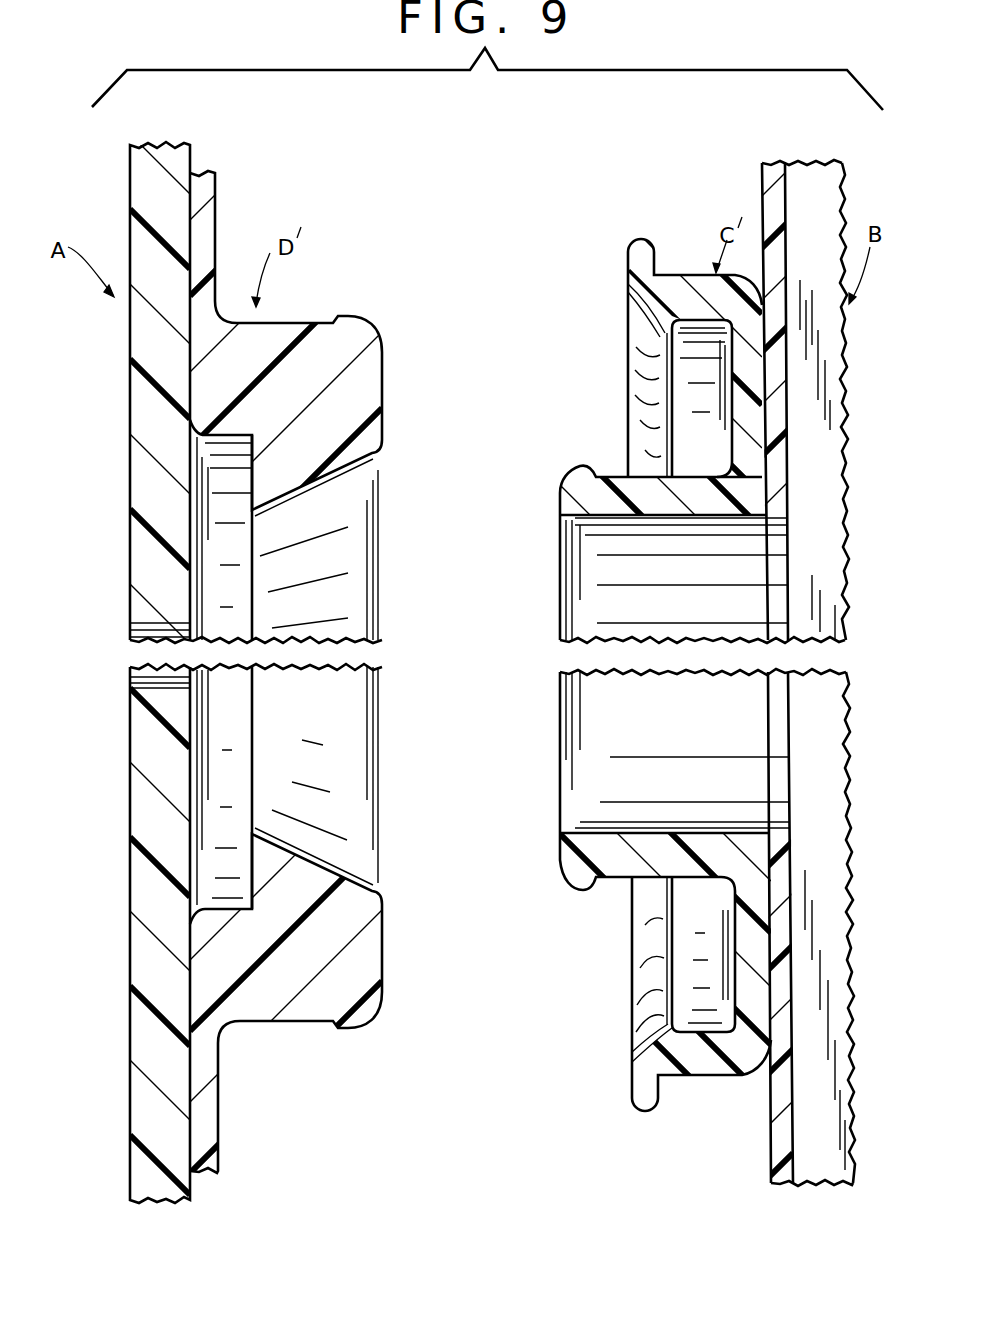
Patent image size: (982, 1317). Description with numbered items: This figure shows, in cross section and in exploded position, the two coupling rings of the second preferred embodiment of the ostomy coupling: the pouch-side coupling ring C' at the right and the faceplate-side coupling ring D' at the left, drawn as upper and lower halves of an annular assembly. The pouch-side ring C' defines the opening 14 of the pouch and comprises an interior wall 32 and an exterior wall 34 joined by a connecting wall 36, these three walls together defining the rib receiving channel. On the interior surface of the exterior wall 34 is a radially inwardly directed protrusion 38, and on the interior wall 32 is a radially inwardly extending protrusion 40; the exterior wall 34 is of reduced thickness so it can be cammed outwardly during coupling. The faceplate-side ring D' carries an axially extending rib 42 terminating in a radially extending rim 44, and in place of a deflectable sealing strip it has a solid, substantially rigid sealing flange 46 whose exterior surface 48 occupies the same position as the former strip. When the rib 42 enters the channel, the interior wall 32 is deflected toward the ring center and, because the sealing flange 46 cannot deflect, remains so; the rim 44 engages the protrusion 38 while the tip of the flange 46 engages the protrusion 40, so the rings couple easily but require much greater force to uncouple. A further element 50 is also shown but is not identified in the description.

The opening 14 is at (777, 583).
The interior wall 32 is at (628, 513).
The exterior wall 34 is at (690, 300).
The wall 36 is at (736, 417).
The protrusion 38 is at (660, 317).
The protrusion 40 is at (581, 478).
The rib 42 is at (263, 360).
The rim 44 is at (340, 360).
The sealing flange 46 is at (312, 460).
The exterior surface 48 is at (282, 507).
The inner ring 50 is at (267, 475).